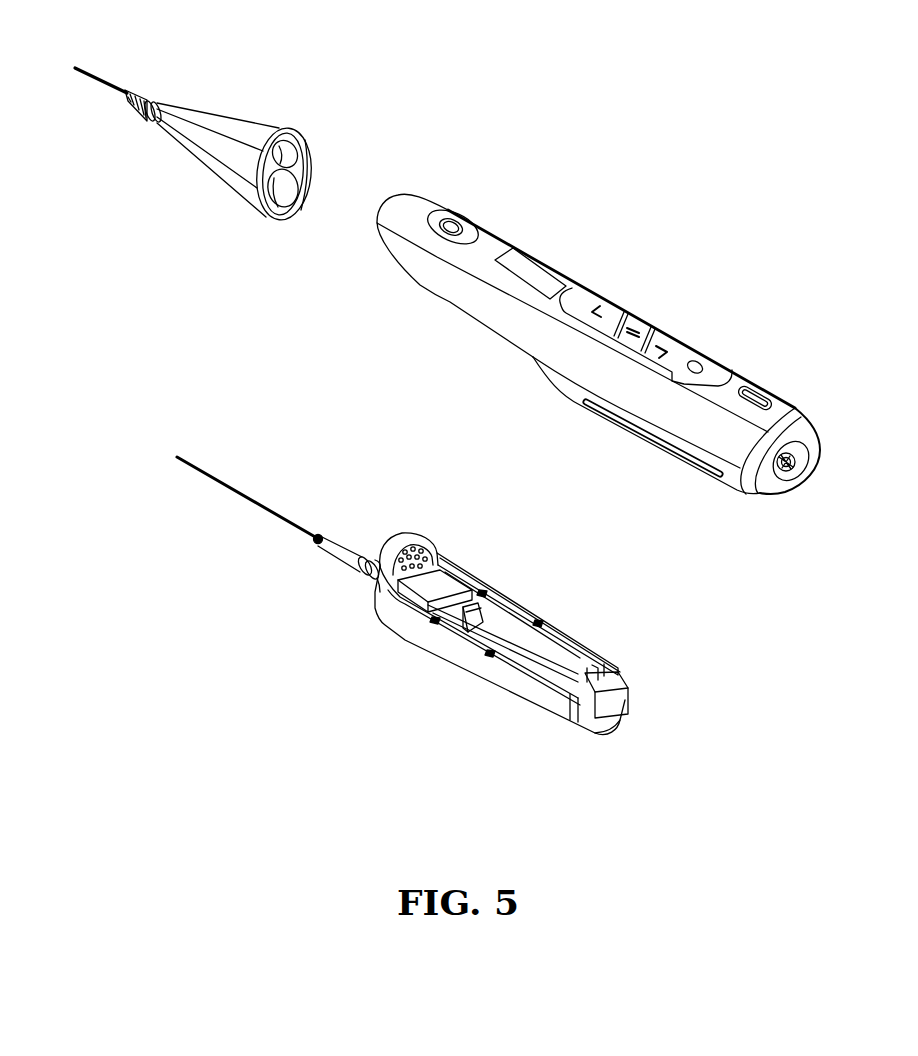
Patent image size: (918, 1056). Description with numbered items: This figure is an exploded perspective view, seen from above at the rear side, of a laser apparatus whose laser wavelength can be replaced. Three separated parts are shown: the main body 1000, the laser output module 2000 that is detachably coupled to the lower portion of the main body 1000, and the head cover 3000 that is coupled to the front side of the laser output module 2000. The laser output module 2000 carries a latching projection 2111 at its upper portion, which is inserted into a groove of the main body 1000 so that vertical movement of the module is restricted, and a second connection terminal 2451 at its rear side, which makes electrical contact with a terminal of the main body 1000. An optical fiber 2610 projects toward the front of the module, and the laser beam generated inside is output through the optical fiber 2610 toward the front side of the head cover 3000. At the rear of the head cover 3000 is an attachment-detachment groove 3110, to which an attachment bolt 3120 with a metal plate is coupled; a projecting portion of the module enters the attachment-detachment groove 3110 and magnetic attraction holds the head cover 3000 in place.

The main body 1000 is at (704, 317).
The laser output module 2000 is at (355, 621).
The latching projection 2111 is at (505, 588).
The second connection terminal 2451 is at (442, 550).
The optical fiber 2610 is at (240, 502).
The head cover 3000 is at (249, 149).
The attachment-detachment groove 3110 is at (289, 152).
The attachment bolt 3120 is at (306, 203).